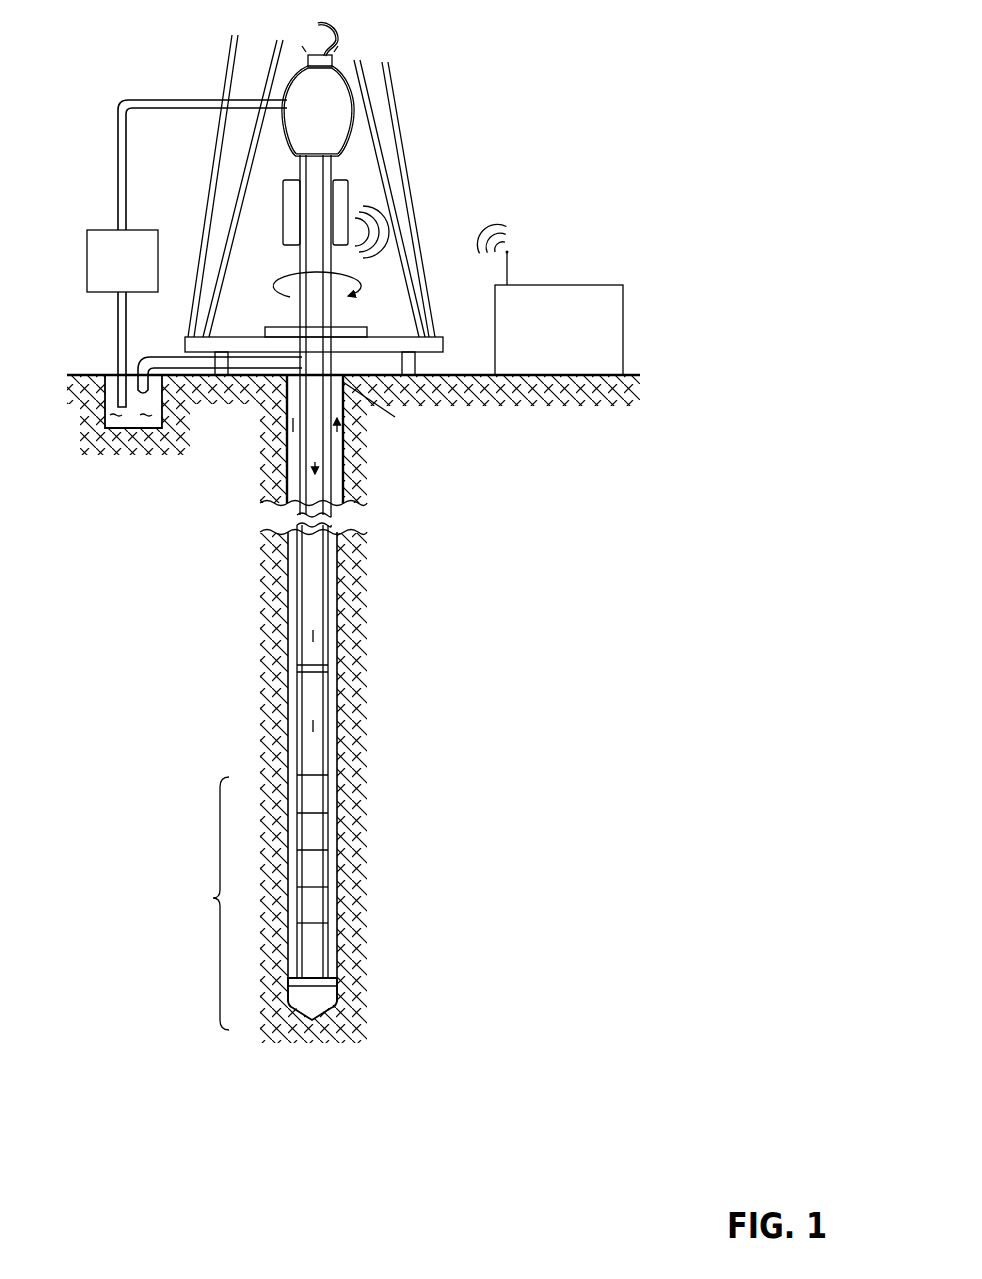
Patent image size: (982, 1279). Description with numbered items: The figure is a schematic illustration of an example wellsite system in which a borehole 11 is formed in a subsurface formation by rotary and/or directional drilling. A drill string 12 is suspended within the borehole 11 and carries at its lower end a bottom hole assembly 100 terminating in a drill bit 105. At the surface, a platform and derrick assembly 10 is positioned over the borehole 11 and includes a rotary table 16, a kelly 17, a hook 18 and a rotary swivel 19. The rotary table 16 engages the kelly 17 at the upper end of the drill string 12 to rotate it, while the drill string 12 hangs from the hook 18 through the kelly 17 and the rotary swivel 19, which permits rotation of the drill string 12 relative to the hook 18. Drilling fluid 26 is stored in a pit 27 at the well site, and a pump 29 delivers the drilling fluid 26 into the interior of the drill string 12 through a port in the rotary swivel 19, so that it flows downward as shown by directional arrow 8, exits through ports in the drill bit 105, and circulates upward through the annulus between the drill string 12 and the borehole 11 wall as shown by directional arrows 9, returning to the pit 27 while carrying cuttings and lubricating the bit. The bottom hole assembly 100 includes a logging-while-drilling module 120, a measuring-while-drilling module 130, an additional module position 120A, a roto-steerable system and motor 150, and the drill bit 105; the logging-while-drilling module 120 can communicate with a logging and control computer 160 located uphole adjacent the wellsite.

The directional arrow 8 is at (300, 444).
The directional arrows 9 is at (287, 441).
The platform and derrick assembly 10 is at (424, 97).
The borehole 11 is at (362, 339).
The drill string 12 is at (316, 376).
The rotary table 16 is at (341, 375).
The kelly 17 is at (310, 312).
The hook 18 is at (316, 24).
The rotary swivel 19 is at (305, 144).
The drilling fluid 26 is at (137, 430).
The pit 27 is at (109, 372).
The pump 29 is at (100, 296).
The bottom hole assembly 100 is at (212, 898).
The drill bit 105 is at (314, 992).
The logging-while-drilling module 120 is at (318, 832).
The additional LWD and/or MWD module 120A is at (324, 908).
The measuring-while-drilling module 130 is at (330, 870).
The roto-steerable system and motor 150 is at (329, 948).
The logging and control computer 160 is at (610, 285).